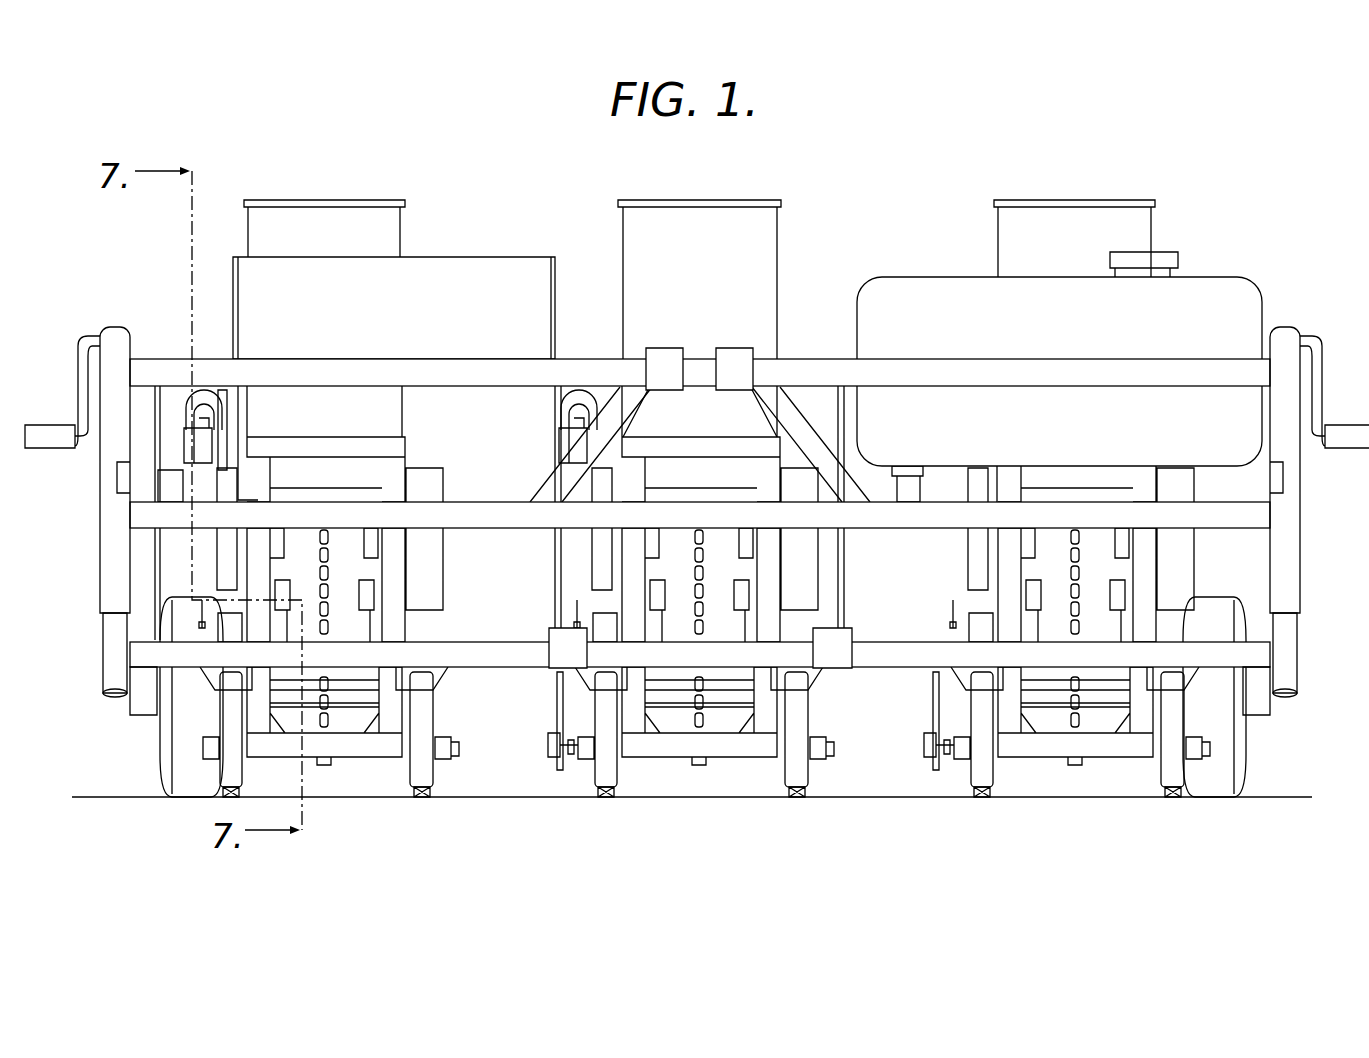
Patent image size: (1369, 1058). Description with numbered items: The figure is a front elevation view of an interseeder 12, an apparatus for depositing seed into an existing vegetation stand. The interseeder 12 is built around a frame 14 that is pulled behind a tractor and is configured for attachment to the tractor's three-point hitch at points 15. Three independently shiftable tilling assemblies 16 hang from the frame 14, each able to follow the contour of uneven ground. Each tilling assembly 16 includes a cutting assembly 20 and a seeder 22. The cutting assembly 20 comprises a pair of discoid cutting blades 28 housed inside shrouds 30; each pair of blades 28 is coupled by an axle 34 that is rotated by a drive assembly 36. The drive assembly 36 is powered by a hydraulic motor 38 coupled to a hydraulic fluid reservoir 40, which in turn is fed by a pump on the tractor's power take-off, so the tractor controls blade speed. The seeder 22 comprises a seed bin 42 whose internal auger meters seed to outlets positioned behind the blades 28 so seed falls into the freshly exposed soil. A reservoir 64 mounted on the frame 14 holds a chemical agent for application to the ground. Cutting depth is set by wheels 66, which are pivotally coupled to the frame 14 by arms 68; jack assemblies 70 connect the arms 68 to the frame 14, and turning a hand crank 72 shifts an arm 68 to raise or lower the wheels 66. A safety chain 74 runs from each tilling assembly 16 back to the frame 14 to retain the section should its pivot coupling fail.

The interseeder 12 is at (1212, 175).
The frame 14 is at (166, 367).
The points 15 is at (690, 353).
The tilling assemblies 16 is at (331, 783).
The cutting assembly 20 is at (448, 712).
The seeder 22 is at (692, 233).
The cutting blades 28 is at (437, 797).
The shrouds 30 is at (245, 783).
The axle 34 is at (575, 748).
The drive assembly 36 is at (550, 713).
The hydraulic motor 38 is at (603, 620).
The hydraulic fluid reservoir 40 is at (447, 262).
The seed bin 42 is at (257, 232).
The reservoir 64 is at (1243, 297).
The wheels 66 is at (165, 767).
The arms 68 is at (137, 703).
The jack assemblies 70 is at (107, 512).
The hand crank 72 is at (67, 432).
The safety chain 74 is at (328, 548).